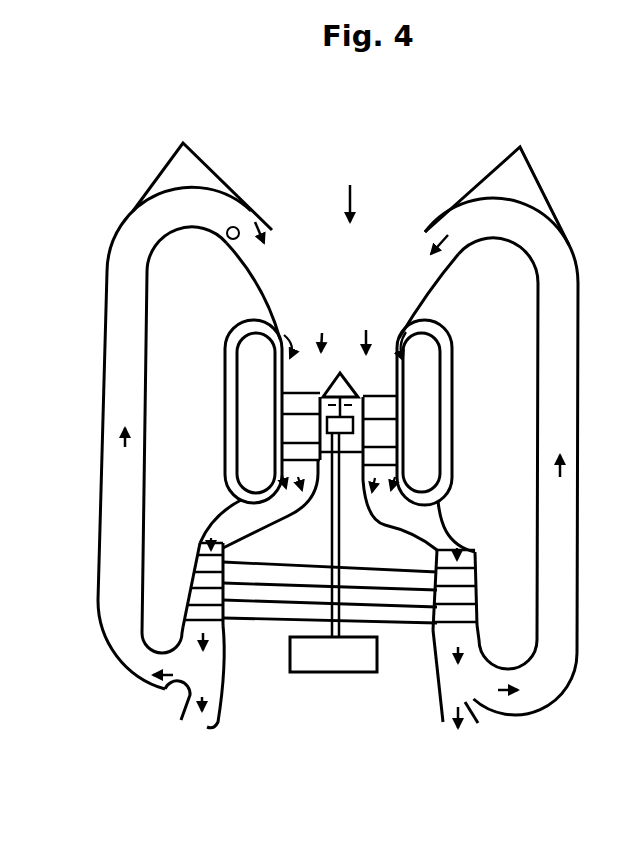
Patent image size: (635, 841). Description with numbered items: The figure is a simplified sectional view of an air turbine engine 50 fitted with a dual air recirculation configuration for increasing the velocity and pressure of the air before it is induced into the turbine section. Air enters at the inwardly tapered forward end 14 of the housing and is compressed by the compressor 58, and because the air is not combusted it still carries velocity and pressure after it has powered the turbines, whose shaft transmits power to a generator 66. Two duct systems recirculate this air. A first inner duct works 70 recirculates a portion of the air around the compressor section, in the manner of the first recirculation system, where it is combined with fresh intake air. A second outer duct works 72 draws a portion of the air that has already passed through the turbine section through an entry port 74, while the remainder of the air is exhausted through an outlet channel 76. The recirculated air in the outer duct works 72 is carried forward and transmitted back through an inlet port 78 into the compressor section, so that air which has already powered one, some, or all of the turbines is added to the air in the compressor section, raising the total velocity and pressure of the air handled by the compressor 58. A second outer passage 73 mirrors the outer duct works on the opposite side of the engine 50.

The air turbine engine 50 is at (456, 120).
The inwardly tapered forward end 14 is at (203, 163).
The compressor 58 is at (303, 392).
The generator 66 is at (340, 672).
The first inner duct works 70 is at (225, 369).
The second outer duct works 72 is at (143, 445).
The right outer passage 73 is at (580, 411).
The entry port 74 is at (165, 696).
The outlet channel 76 is at (207, 727).
The inlet port 78 is at (230, 240).